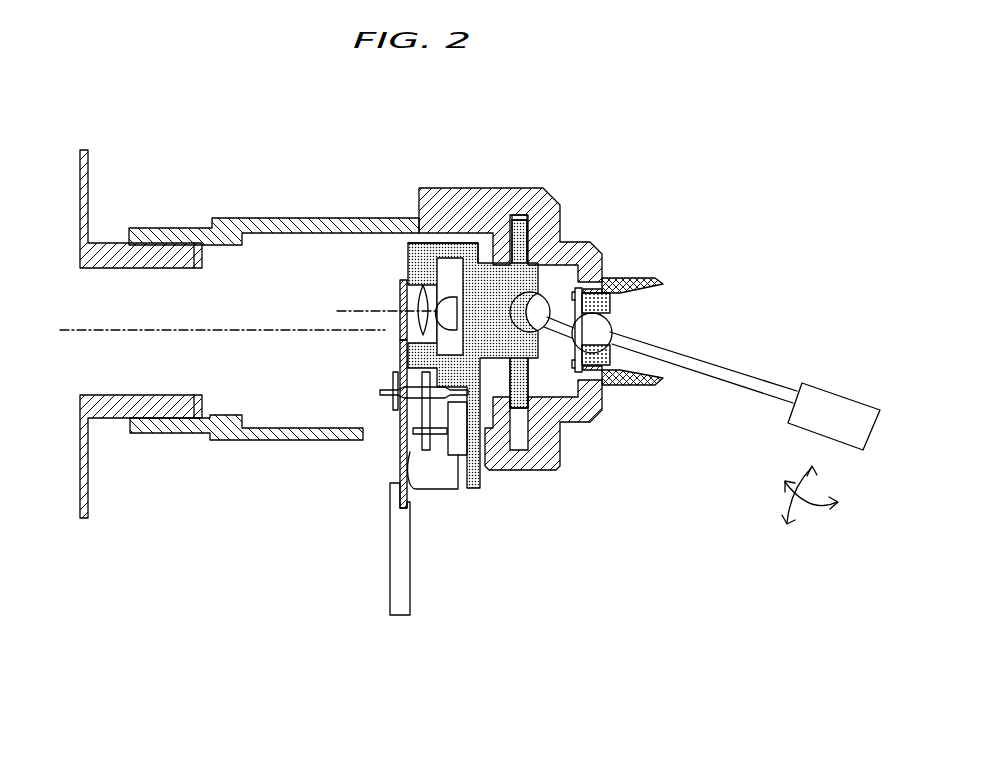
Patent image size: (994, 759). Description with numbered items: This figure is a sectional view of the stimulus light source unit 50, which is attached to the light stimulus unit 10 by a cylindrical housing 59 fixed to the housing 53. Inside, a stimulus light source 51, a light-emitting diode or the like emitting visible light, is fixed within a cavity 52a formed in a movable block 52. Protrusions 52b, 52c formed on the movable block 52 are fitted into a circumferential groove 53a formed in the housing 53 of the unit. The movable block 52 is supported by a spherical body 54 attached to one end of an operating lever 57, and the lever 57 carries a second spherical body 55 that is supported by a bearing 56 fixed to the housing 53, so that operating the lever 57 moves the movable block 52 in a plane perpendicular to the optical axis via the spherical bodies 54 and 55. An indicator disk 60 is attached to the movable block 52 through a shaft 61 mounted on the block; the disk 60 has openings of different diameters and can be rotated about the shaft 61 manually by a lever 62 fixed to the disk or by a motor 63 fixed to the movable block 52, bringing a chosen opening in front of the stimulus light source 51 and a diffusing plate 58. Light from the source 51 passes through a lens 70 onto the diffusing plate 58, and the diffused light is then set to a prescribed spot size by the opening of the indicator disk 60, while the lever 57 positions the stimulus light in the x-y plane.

The light stimulus unit 10 is at (104, 180).
The stimulus light source unit 50 is at (270, 182).
The stimulus light source 51 is at (437, 340).
The movable block 52 is at (509, 315).
The cavity 52a is at (443, 270).
The protrusion 52b is at (528, 214).
The protrusion 52c is at (530, 398).
The housing 53 is at (510, 323).
The circumferential groove 53a is at (527, 450).
The spherical body 54 is at (545, 298).
The spherical body 55 is at (608, 322).
The bearing 56 is at (612, 308).
The operating lever 57 is at (808, 384).
The diffusing plate 58 is at (402, 280).
The cylindrical housing 59 is at (313, 219).
The indicator disk 60 is at (400, 456).
The shaft 61 is at (380, 392).
The lever 62 is at (410, 568).
The motor 63 is at (463, 460).
The lens 70 is at (416, 300).